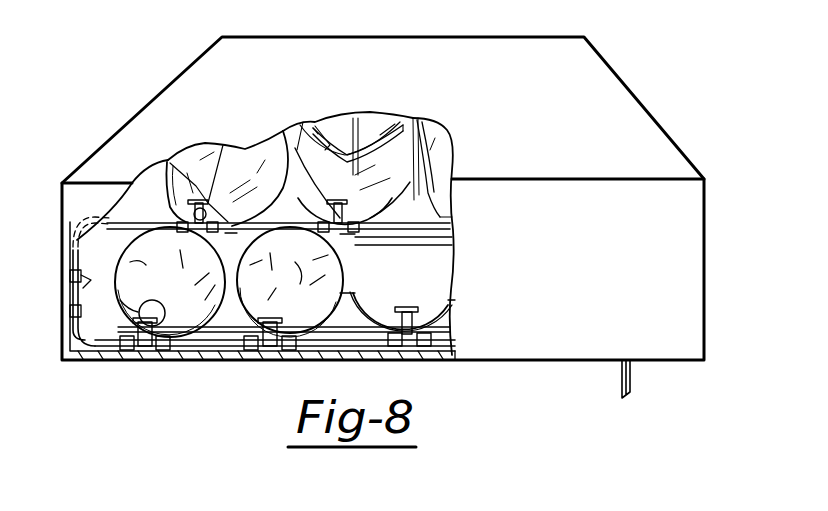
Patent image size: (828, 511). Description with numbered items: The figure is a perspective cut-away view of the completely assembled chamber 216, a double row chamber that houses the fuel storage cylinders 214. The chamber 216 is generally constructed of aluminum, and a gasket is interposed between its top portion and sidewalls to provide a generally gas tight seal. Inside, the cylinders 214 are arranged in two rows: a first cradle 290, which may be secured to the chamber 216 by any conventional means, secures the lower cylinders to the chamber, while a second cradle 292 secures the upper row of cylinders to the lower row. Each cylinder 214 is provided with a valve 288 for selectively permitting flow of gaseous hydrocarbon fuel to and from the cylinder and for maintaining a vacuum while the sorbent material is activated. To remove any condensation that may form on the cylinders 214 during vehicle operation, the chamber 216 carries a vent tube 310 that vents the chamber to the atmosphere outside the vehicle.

The cylinder 214 is at (165, 260).
The chamber 216 is at (632, 90).
The valve 288 is at (228, 172).
The first cradle 290 is at (218, 315).
The second cradle 292 is at (392, 130).
The vent tube 310 is at (632, 378).